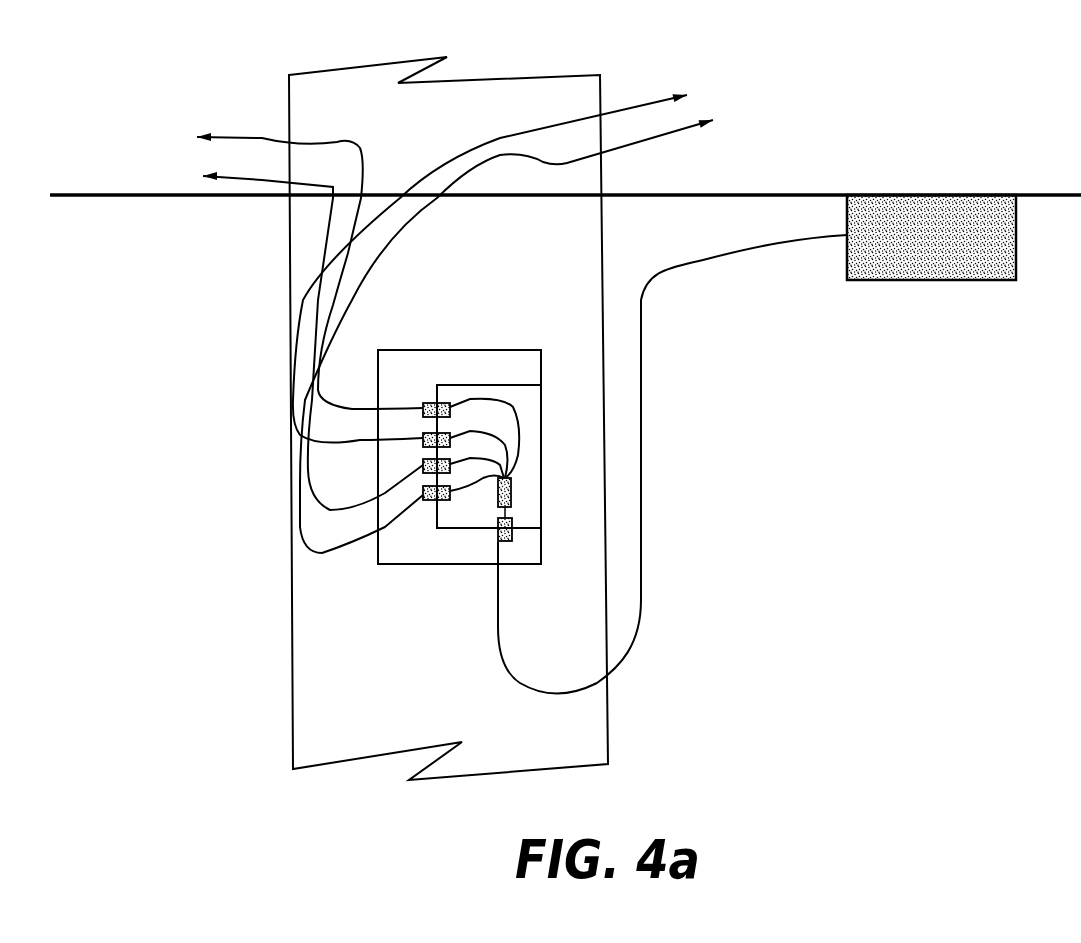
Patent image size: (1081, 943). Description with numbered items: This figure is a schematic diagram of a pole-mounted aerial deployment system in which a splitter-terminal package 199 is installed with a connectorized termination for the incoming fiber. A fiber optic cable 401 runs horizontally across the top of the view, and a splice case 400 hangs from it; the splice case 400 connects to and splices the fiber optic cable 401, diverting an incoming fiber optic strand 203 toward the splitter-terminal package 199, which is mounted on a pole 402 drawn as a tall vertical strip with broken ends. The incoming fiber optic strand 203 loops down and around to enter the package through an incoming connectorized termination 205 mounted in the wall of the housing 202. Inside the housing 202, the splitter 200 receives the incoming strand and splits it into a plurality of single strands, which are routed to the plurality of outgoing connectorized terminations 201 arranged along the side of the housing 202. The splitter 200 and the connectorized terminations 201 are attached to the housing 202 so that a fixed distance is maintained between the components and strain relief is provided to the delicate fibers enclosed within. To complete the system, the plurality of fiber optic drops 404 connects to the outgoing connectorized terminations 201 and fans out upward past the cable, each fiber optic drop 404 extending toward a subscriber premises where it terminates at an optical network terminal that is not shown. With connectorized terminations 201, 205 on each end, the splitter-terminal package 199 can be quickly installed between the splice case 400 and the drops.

The splitter-terminal package 199 is at (378, 553).
The splitter 200 is at (511, 493).
The outgoing connectorized terminations 201 is at (423, 403).
The housing 202 is at (523, 385).
The incoming fiber optic strand 203 is at (642, 552).
The incoming connectorized termination 205 is at (509, 542).
The splice case 400 is at (930, 281).
The fiber optic cable 401 is at (1052, 193).
The pole 402 is at (293, 718).
The fiber optic drops 404 is at (229, 176).